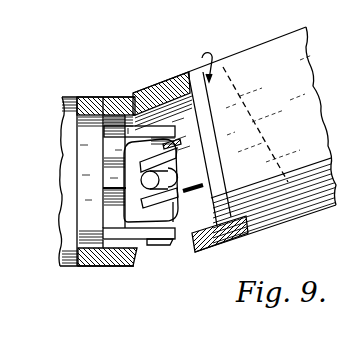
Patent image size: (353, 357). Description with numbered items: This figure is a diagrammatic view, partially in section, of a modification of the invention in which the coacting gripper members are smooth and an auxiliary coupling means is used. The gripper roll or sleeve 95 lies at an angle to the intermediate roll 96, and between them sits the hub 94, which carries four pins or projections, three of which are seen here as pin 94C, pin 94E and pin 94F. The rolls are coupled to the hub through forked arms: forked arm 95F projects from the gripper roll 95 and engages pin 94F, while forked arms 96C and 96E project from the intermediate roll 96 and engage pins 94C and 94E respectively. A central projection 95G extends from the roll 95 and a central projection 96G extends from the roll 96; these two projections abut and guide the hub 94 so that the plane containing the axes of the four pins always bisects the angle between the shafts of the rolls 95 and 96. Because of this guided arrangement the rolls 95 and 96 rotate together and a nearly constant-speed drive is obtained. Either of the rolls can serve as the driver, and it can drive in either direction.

The hub 94 is at (148, 217).
The pin 94C is at (168, 240).
The pin 94E is at (138, 117).
The pin 94F is at (172, 194).
The gripper roll or sleeve 95 is at (251, 57).
The forked arm 95F is at (181, 157).
The central projection 95G is at (197, 195).
The intermediate roll 96 is at (67, 106).
The forked arm 96C is at (140, 239).
The forked arm 96E is at (114, 130).
The central projection 96G is at (101, 191).